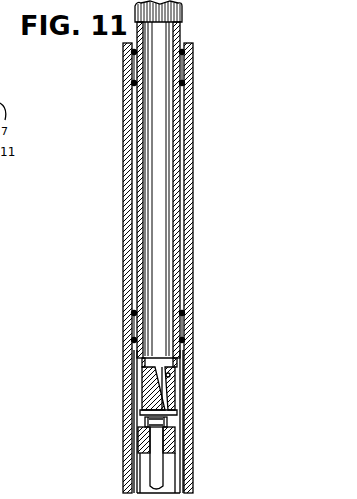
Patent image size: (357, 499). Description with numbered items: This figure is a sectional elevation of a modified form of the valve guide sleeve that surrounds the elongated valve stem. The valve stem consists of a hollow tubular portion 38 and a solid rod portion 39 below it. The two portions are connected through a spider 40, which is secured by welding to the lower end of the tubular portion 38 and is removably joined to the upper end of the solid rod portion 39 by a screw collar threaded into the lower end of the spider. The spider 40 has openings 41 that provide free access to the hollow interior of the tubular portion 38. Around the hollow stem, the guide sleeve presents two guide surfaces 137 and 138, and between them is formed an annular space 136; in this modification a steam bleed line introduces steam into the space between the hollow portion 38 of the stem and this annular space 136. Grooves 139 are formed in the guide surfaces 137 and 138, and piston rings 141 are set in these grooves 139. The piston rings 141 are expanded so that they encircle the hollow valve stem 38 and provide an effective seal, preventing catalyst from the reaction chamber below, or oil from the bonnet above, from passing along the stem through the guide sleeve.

The tubular portion 38 is at (163, 30).
The solid rod portion 39 is at (155, 470).
The spider 40 is at (163, 412).
The openings 41 is at (143, 377).
The annular space 136 is at (132, 187).
The guide surface 137 is at (133, 69).
The guide surface 138 is at (132, 326).
The grooves 139 is at (133, 51).
The piston rings 141 is at (194, 79).